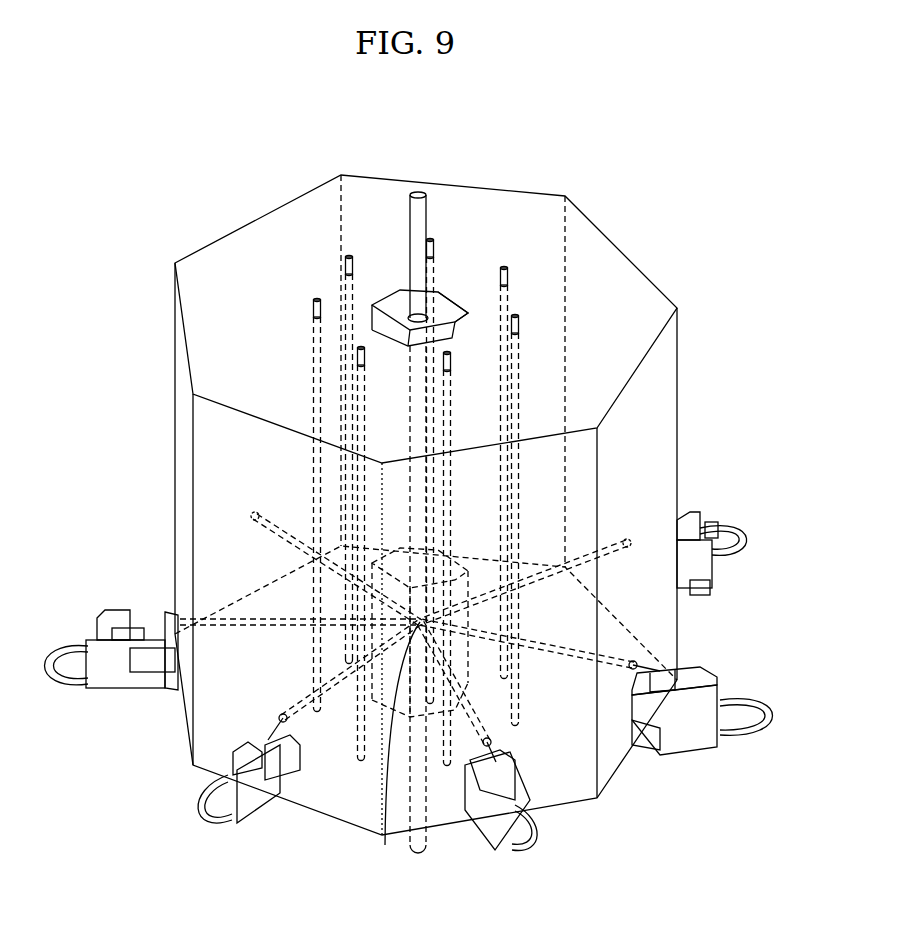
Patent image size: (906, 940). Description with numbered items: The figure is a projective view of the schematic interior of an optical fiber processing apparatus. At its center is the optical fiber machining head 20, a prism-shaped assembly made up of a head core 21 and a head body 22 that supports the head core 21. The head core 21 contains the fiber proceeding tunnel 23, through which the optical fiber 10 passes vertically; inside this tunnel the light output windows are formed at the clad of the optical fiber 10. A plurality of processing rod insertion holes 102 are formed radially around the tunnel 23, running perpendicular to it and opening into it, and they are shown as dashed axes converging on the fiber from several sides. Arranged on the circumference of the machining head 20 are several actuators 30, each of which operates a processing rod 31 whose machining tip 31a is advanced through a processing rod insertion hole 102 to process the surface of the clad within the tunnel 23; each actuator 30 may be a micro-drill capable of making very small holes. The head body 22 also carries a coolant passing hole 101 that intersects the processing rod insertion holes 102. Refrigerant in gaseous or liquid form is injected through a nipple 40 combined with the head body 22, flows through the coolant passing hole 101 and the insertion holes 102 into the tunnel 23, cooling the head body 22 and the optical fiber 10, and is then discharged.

The optical fiber 10 is at (417, 194).
The optical fiber machining head 20 is at (725, 208).
The head core 21 is at (455, 336).
The head body 22 is at (612, 248).
The fiber proceeding tunnel 23 is at (455, 292).
The actuator 30 is at (117, 702).
The processing rod 31 is at (250, 634).
The machining tip 31a is at (400, 846).
The nipple 40 is at (349, 256).
The coolant passing hole 101 is at (300, 371).
The processing rod insertion hole 102 is at (391, 660).